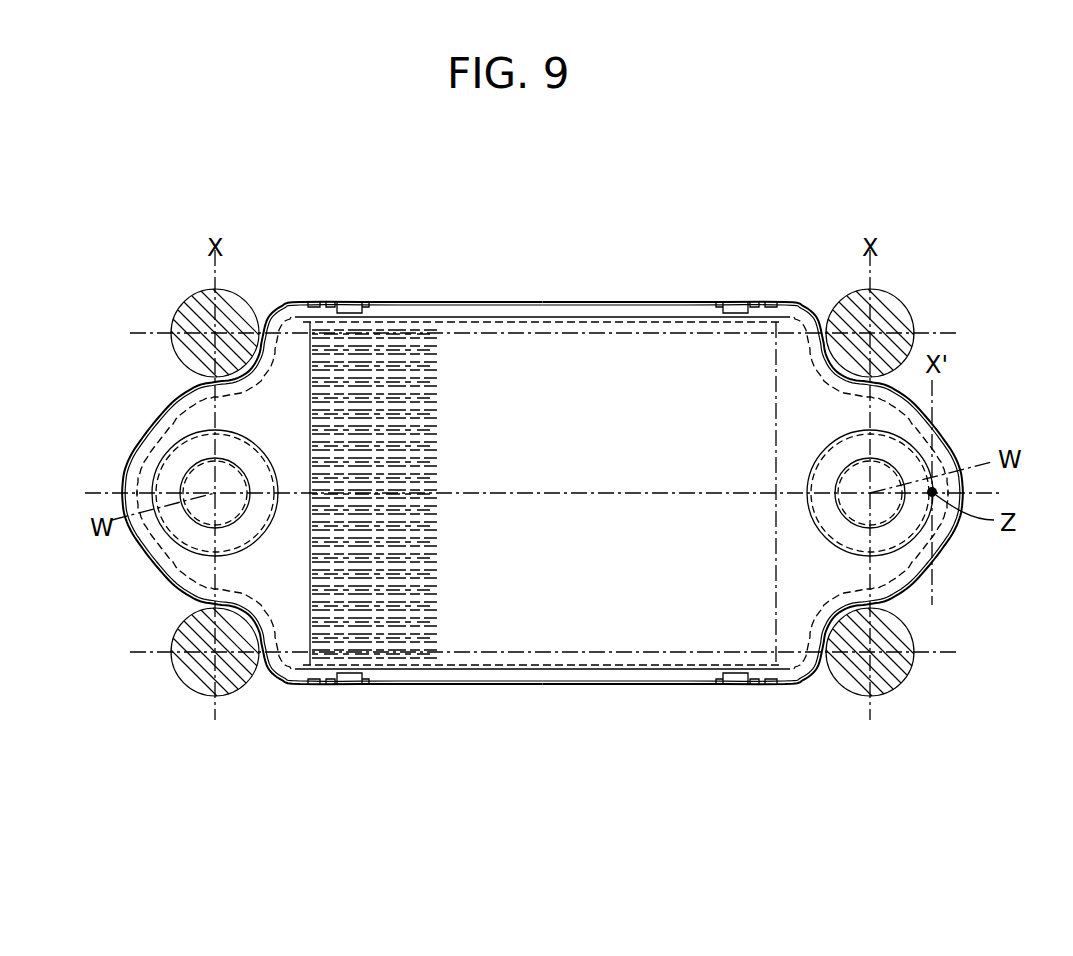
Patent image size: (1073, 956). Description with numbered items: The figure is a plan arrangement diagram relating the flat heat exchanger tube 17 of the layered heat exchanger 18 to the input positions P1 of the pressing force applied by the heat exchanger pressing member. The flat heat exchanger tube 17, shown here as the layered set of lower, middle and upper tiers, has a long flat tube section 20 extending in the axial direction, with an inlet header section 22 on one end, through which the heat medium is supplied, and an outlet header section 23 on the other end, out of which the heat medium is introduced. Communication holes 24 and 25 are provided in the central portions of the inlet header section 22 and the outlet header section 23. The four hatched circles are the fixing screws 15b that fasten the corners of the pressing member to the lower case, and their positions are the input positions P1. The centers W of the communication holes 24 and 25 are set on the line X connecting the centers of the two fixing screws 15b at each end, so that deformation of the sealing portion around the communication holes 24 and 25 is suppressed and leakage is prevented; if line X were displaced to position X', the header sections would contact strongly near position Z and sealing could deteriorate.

The layered heat exchanger 18 is at (658, 272).
The flat tube section 20 is at (492, 372).
The flat heat exchanger tube 17 is at (565, 625).
The inlet header section 22 is at (180, 526).
The outlet header section 23 is at (845, 470).
The communication hole 24 is at (189, 471).
The communication hole 25 is at (905, 517).
The substrate subassembly fixing screw 15b is at (232, 314).